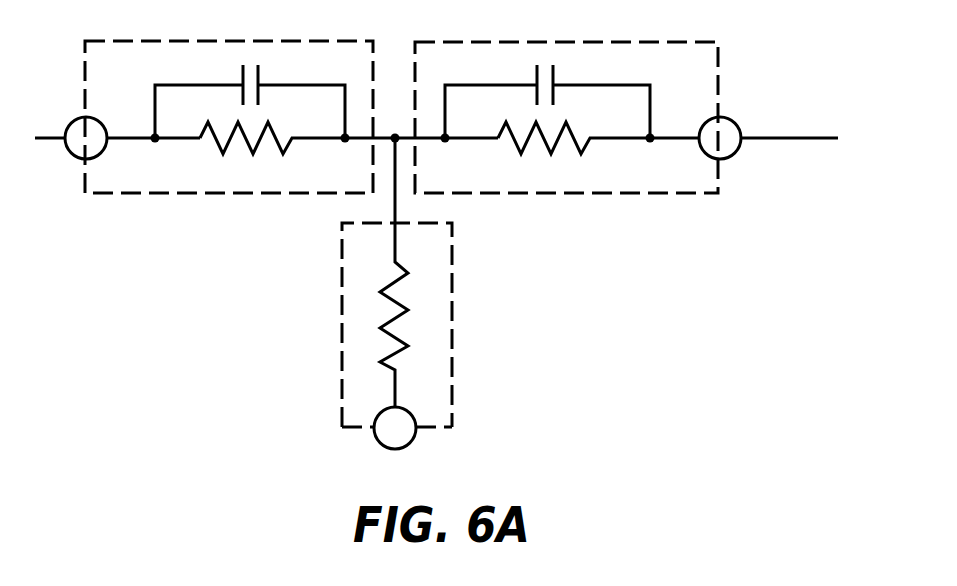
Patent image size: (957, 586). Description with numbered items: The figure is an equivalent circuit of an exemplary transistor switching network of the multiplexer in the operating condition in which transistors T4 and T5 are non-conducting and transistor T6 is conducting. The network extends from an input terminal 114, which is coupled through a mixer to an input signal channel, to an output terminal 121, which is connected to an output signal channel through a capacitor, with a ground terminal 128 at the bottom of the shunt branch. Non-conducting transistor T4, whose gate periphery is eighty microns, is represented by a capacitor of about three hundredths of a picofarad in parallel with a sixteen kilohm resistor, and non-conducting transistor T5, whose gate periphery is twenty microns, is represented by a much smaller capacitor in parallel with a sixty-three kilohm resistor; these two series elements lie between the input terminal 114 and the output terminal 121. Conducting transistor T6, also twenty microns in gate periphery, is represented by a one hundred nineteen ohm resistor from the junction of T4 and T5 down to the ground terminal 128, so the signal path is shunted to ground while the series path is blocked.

The input terminal 114 is at (67, 126).
The output terminal 121 is at (735, 122).
The ground terminal 128 is at (378, 442).
The transistor T4 is at (232, 39).
The transistor T5 is at (615, 39).
The transistor T6 is at (453, 385).